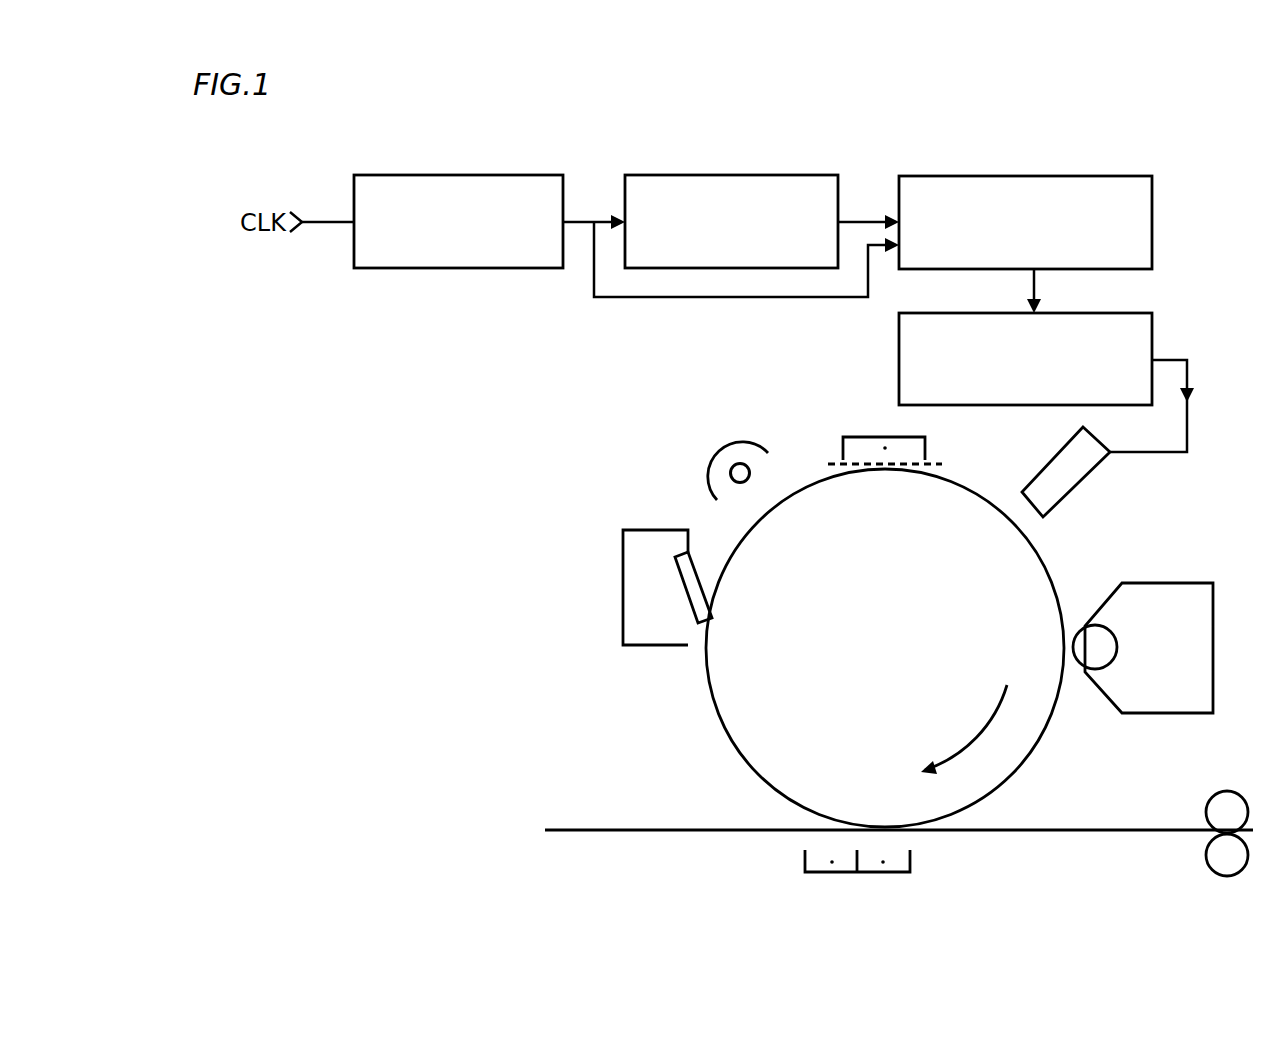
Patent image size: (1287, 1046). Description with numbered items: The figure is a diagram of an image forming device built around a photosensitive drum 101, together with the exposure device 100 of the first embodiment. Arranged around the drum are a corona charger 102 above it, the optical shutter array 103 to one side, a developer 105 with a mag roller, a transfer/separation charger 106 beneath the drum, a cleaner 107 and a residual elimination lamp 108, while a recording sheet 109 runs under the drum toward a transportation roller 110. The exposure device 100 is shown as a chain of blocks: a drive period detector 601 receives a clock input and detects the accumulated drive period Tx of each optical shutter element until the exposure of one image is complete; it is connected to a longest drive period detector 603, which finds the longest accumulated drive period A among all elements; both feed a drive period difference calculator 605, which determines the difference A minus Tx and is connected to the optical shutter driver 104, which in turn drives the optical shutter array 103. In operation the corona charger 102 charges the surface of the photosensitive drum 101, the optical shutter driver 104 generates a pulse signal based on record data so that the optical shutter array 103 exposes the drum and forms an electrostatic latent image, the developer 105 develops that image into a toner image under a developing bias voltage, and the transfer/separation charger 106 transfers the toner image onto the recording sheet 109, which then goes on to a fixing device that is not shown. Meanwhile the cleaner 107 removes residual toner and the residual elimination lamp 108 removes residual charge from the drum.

The exposure device 100 is at (857, 138).
The photosensitive drum 101 is at (716, 705).
The corona charger 102 is at (878, 436).
The optical shutter array 103 is at (1077, 487).
The optical shutter driver 104 is at (1097, 313).
The developer 105 is at (1176, 583).
The transfer/separation charger 106 is at (833, 873).
The cleaner 107 is at (623, 571).
The residual elimination lamp 108 is at (718, 451).
The recording sheet 109 is at (637, 834).
The transportation roller 110 is at (1227, 791).
The drive period detector 601 is at (459, 175).
The longest drive period detector 603 is at (740, 175).
The drive period difference calculator 605 is at (1032, 176).